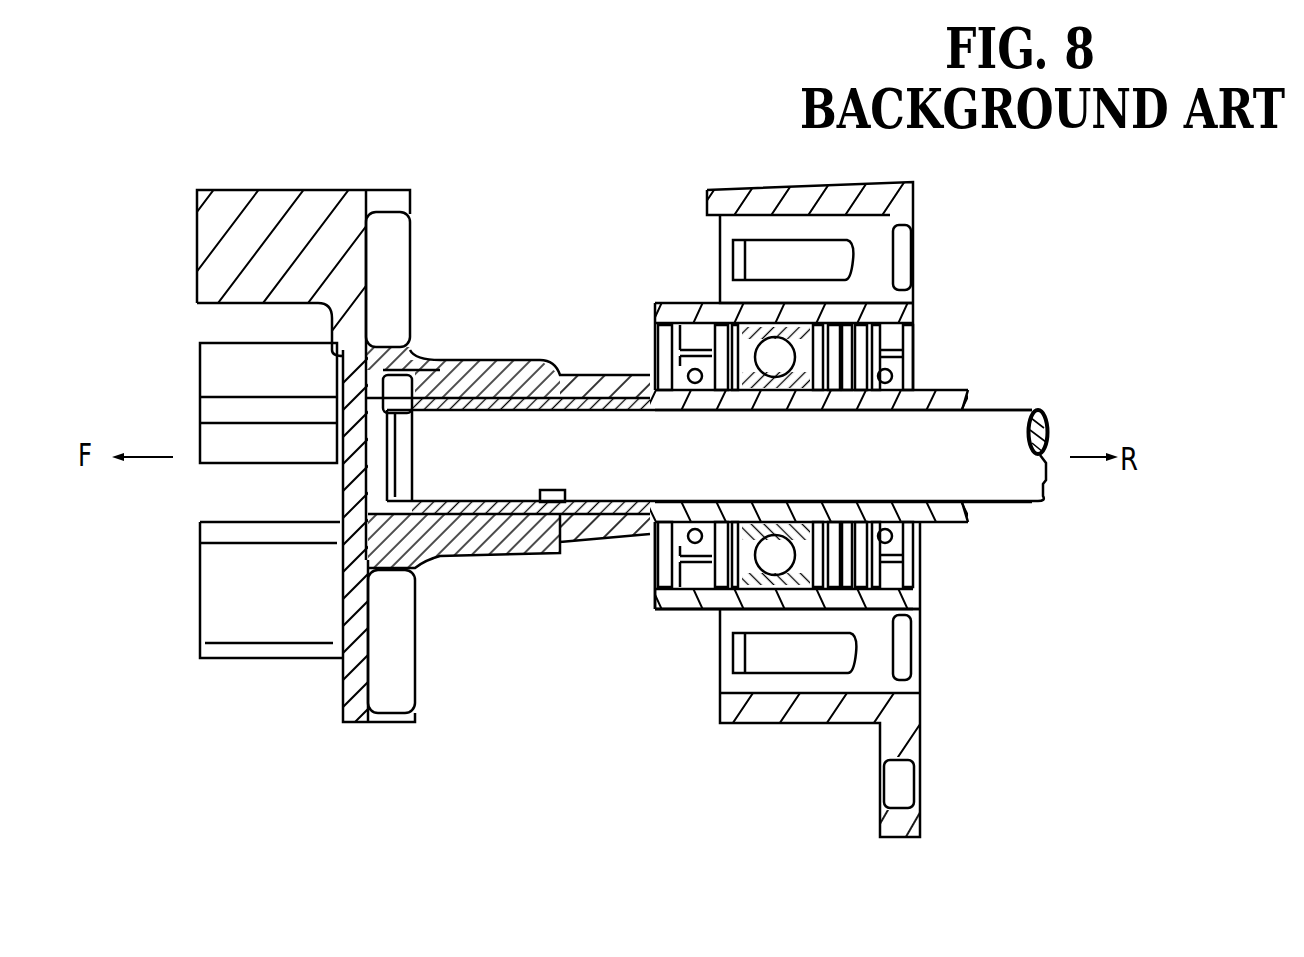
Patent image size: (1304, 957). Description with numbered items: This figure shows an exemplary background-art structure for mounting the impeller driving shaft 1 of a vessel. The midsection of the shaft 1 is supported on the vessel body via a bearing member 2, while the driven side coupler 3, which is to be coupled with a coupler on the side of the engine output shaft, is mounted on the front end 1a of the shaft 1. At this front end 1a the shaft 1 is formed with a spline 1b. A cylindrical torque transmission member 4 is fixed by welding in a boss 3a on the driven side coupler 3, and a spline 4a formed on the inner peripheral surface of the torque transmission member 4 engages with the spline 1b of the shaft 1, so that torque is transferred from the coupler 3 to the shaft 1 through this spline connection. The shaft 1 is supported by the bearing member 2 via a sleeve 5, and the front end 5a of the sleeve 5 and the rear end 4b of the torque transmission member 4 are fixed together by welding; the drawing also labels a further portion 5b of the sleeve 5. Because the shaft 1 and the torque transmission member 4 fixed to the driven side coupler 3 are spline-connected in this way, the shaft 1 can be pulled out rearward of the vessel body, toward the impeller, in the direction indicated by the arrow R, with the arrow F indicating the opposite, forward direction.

The impeller driving shaft 1 is at (1012, 420).
The front end 1a is at (523, 447).
The spline 1b is at (470, 398).
The bearing member 2 is at (785, 731).
The driven side coupler 3 is at (366, 728).
The boss 3a is at (497, 382).
The torque transmission member 4 is at (459, 522).
The spline 4a is at (531, 324).
The rear end 4b is at (598, 533).
The sleeve 5 is at (945, 390).
The front end 5a is at (617, 390).
The bearing spacer 5b is at (968, 395).